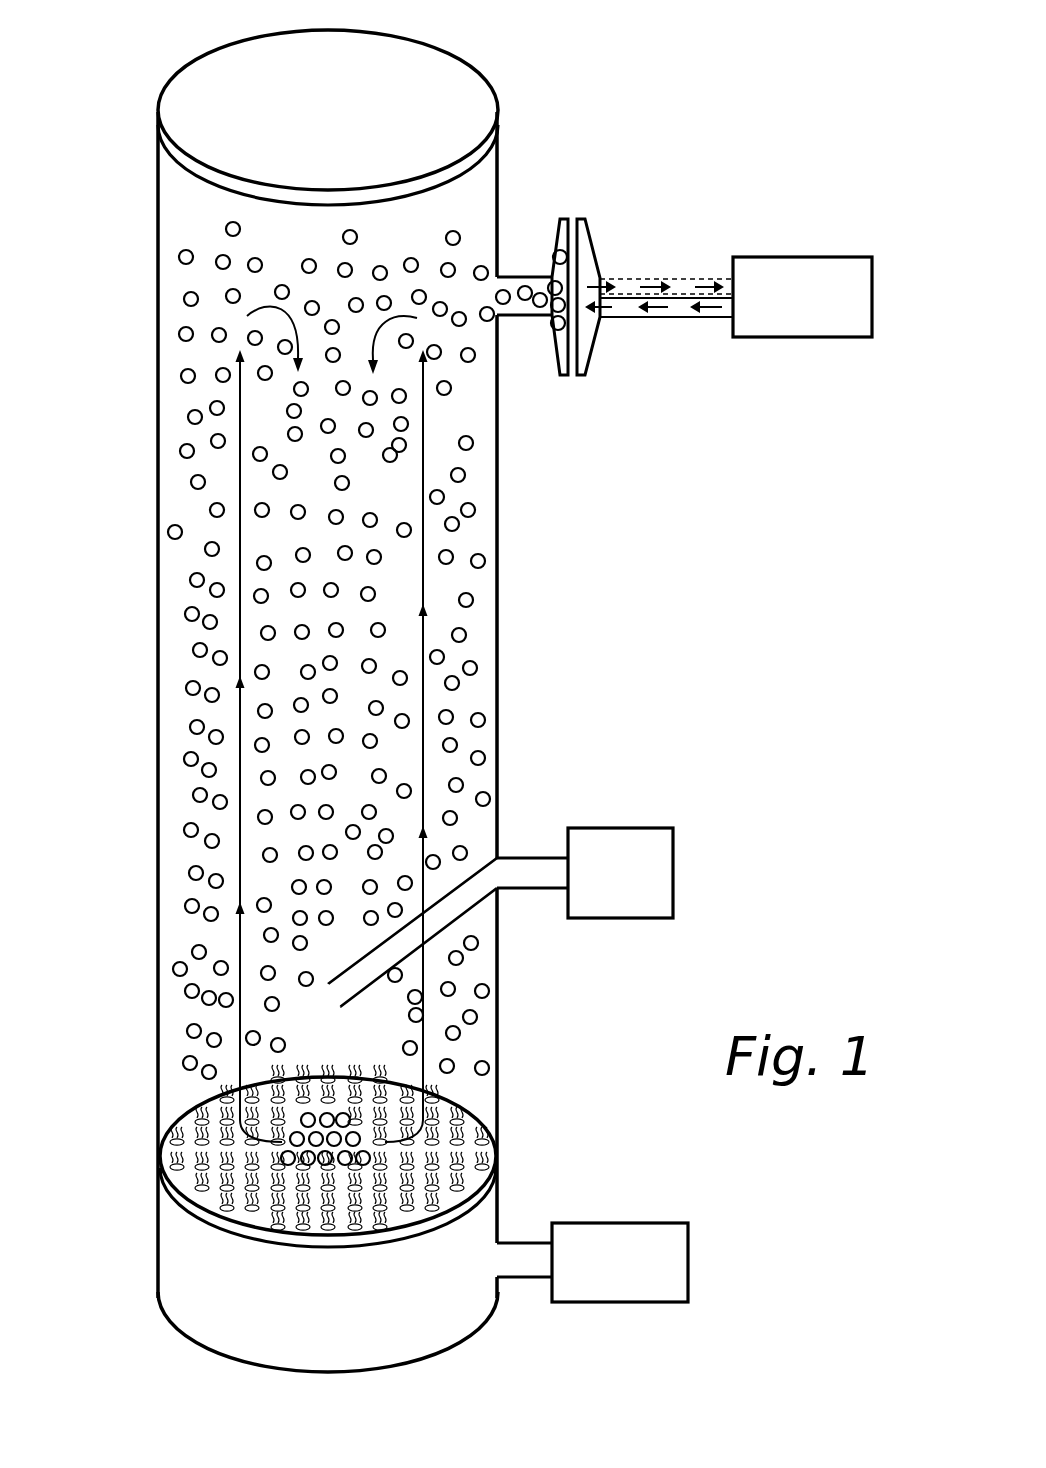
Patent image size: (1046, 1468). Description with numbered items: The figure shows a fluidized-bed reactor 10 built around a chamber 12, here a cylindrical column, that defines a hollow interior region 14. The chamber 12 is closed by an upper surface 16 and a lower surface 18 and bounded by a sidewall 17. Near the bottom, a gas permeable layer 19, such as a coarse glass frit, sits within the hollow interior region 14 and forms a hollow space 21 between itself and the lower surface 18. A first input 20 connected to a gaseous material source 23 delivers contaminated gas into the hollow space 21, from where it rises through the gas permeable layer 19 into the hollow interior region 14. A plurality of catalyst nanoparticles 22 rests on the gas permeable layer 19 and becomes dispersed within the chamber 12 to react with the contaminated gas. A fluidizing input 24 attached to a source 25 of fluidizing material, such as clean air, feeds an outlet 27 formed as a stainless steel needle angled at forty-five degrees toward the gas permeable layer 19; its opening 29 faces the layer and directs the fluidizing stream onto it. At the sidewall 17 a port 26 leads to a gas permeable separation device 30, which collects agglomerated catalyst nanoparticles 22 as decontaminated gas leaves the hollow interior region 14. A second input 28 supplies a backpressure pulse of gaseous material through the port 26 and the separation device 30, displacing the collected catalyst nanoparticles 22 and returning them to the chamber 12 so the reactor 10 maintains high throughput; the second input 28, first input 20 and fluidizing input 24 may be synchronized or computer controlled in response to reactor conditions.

The fluidized-bed reactor 10 is at (652, 98).
The chamber 12 is at (157, 630).
The hollow interior region 14 is at (166, 727).
The upper surface 16 is at (200, 96).
The sidewall 17 is at (497, 546).
The lower surface 18 is at (190, 1330).
The gas permeable layer 19 is at (172, 1185).
The first input 20 is at (520, 1243).
The hollow space 21 is at (446, 1298).
The catalyst nanoparticles 22 is at (489, 1068).
The gaseous material source 23 is at (688, 1259).
The fluidizing input 24 is at (535, 858).
The source of fluidizing material 25 is at (673, 873).
The port 26 is at (500, 277).
The outlet 27 is at (353, 965).
The second input 28 is at (800, 337).
The opening 29 is at (342, 1005).
The gas permeable separation device 30 is at (592, 252).